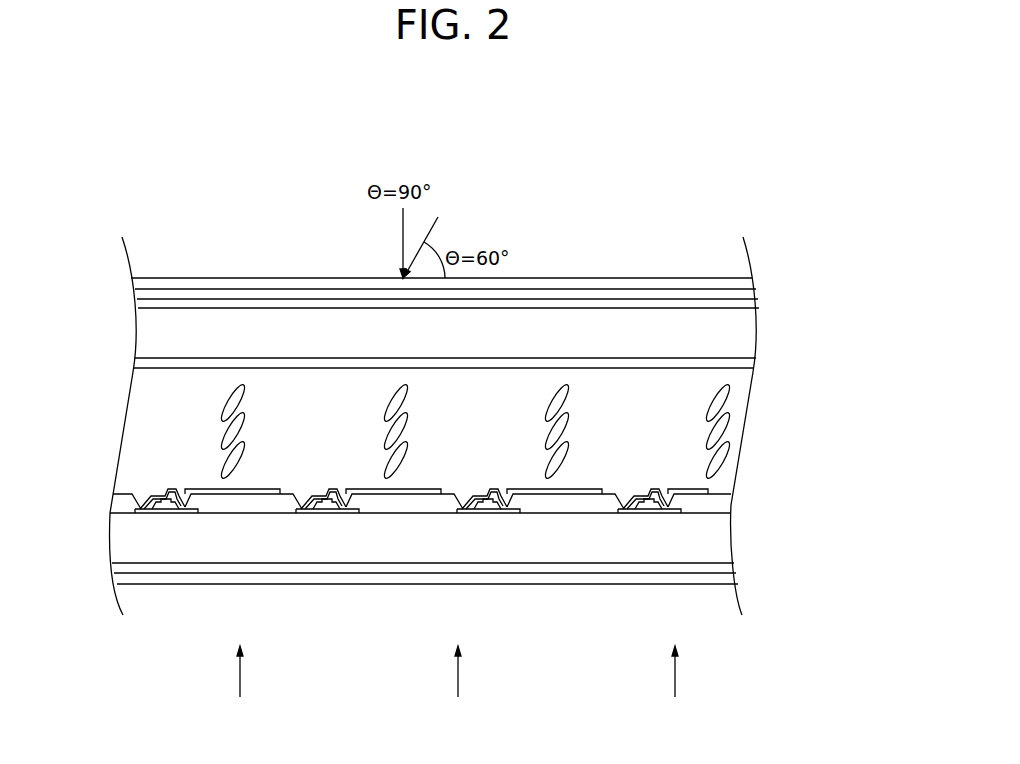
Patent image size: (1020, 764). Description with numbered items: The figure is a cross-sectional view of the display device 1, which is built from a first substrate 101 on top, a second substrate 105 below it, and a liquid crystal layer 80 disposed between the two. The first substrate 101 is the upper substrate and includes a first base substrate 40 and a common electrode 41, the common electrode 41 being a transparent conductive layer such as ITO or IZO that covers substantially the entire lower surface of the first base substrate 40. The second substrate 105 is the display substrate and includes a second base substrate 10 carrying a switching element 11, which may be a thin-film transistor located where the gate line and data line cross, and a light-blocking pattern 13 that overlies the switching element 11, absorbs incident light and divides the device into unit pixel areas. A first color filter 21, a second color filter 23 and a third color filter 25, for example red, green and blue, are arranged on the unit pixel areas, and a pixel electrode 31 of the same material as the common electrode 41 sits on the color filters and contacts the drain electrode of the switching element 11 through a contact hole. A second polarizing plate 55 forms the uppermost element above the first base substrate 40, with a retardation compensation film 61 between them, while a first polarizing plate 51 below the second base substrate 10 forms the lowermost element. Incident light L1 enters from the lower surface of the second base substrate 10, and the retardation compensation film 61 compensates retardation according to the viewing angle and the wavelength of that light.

The display device 1 is at (283, 183).
The second base substrate 10 is at (720, 535).
The switching element 11 is at (318, 512).
The light-blocking pattern 13 is at (355, 497).
The first color filter 21 is at (410, 509).
The second color filter 23 is at (567, 508).
The third color filter 25 is at (687, 508).
The pixel electrode 31 is at (243, 495).
The first base substrate 40 is at (578, 333).
The common electrode 41 is at (532, 365).
The first polarizing plate 51 is at (720, 581).
The second polarizing plate 55 is at (693, 283).
The retardation compensation film 61 is at (628, 293).
The liquid crystal layer 80 is at (768, 370).
The first substrate 101 is at (768, 305).
The second substrate 105 is at (790, 518).
The incident light L1 is at (675, 672).